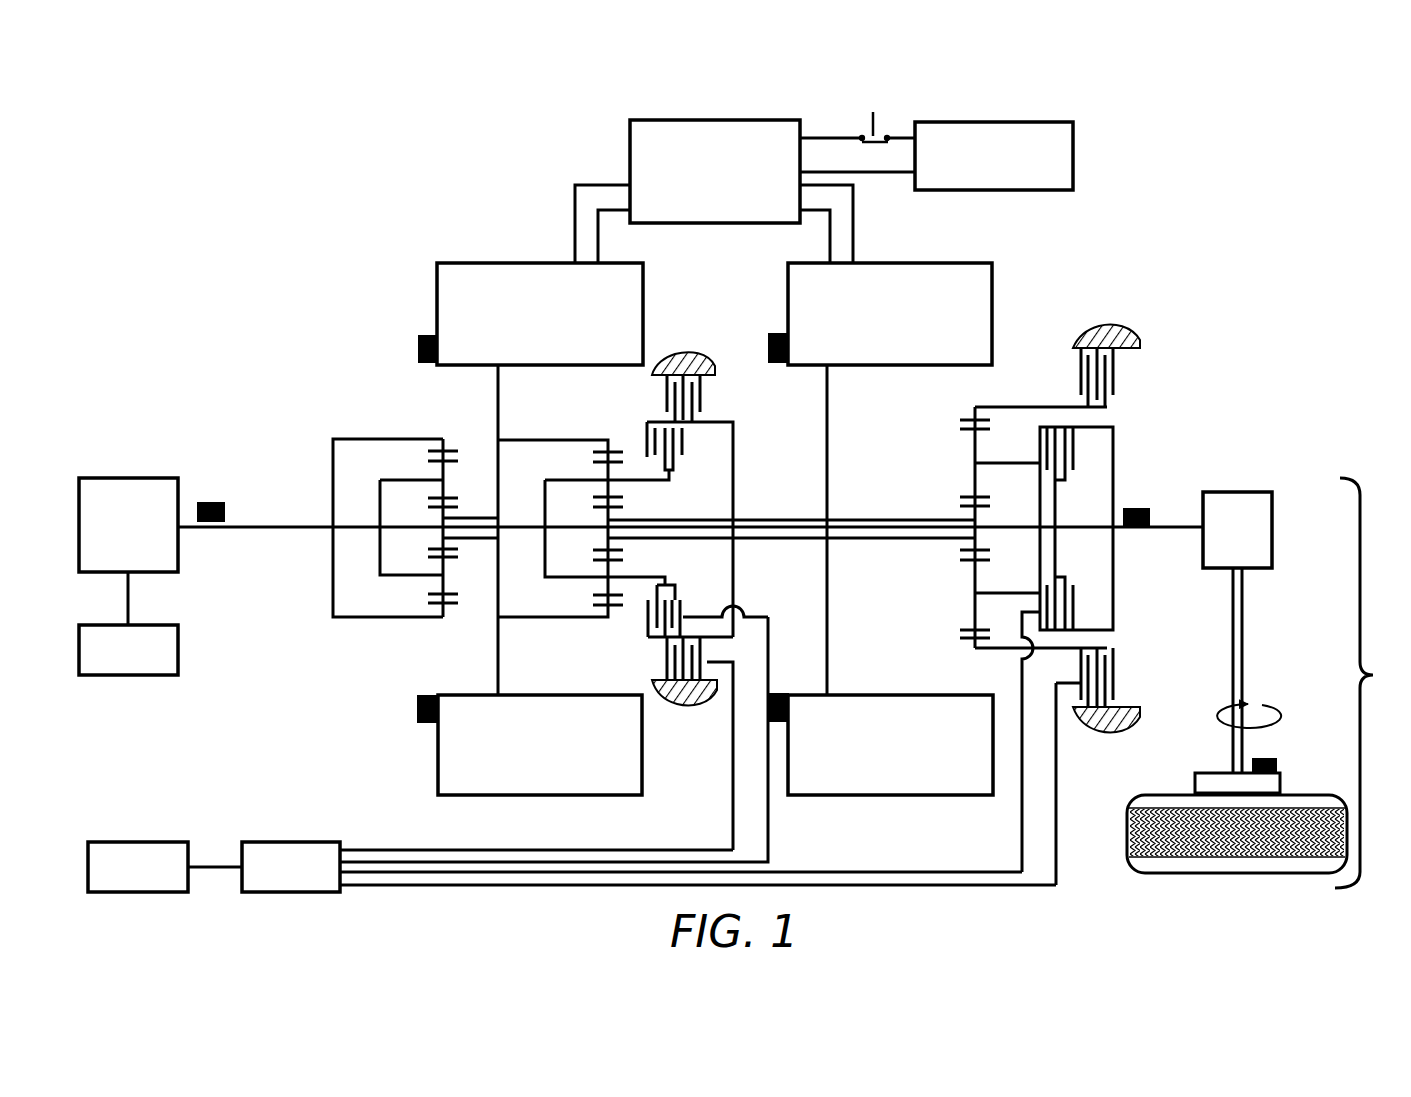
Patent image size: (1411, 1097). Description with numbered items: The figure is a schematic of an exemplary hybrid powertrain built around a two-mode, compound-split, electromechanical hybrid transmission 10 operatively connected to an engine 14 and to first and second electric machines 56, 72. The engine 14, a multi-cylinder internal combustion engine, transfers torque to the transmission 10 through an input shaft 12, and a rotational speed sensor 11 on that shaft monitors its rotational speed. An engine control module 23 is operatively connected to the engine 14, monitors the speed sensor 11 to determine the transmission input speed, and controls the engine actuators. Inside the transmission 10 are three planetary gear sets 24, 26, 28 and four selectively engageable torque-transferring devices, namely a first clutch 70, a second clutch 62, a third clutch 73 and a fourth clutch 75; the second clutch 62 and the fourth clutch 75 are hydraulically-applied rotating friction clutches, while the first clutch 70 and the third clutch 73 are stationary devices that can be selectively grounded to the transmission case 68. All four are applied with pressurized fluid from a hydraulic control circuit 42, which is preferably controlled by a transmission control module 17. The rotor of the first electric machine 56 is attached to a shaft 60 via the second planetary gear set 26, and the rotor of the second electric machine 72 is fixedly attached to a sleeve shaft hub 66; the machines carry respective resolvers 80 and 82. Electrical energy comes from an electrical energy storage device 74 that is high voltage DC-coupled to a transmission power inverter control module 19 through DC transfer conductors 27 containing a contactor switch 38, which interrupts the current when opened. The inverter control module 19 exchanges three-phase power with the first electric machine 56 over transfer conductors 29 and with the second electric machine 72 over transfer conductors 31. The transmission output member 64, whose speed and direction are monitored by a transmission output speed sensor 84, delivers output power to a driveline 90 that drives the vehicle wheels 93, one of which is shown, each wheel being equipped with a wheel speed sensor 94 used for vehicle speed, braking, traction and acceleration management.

The electromechanical hybrid transmission 10 is at (400, 228).
The rotational speed sensor 11 is at (210, 500).
The input shaft 12 is at (290, 524).
The engine 14 is at (135, 478).
The transmission control module 17 is at (130, 842).
The transmission power inverter control module 19 is at (630, 140).
The engine control module 23 is at (178, 665).
The first planetary gear set 24 is at (433, 435).
The second planetary gear set 26 is at (600, 437).
The DC transfer conductors 27 is at (815, 136).
The third planetary gear set 28 is at (963, 410).
The transfer conductors 29 is at (575, 225).
The transfer conductors 31 is at (853, 218).
The contactor switch 38 is at (876, 125).
The hydraulic control circuit 42 is at (260, 842).
The first electric machine 56 is at (437, 298).
The shaft 60 is at (1030, 525).
The clutch C2 62 is at (1075, 470).
The output member 64 is at (1175, 524).
The sleeve shaft hub 66 is at (864, 518).
The transmission case 68 is at (684, 352).
The clutch C1 70 is at (1068, 372).
The second electric machine 72 is at (992, 287).
The clutch C3 73 is at (704, 400).
The electrical energy storage device 74 is at (1073, 145).
The clutch C4 75 is at (684, 455).
The resolver 80 is at (418, 350).
The resolver 82 is at (776, 333).
The transmission output speed sensor 84 is at (1138, 505).
The driveline 90 is at (1374, 673).
The vehicle wheel 93 is at (1195, 783).
The wheel speed sensor 94 is at (1265, 757).